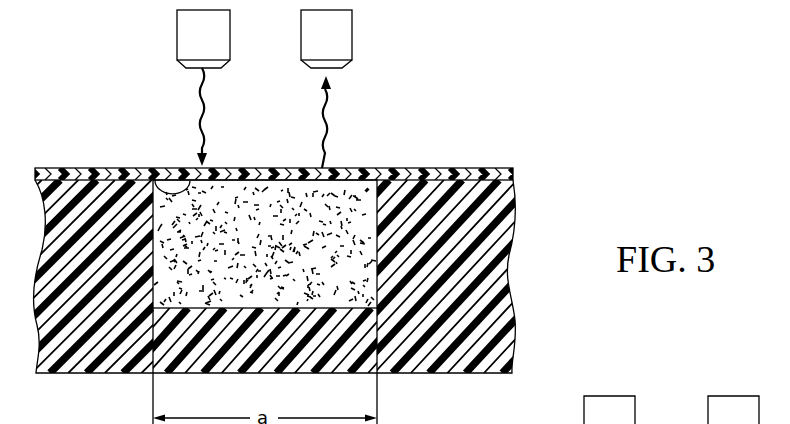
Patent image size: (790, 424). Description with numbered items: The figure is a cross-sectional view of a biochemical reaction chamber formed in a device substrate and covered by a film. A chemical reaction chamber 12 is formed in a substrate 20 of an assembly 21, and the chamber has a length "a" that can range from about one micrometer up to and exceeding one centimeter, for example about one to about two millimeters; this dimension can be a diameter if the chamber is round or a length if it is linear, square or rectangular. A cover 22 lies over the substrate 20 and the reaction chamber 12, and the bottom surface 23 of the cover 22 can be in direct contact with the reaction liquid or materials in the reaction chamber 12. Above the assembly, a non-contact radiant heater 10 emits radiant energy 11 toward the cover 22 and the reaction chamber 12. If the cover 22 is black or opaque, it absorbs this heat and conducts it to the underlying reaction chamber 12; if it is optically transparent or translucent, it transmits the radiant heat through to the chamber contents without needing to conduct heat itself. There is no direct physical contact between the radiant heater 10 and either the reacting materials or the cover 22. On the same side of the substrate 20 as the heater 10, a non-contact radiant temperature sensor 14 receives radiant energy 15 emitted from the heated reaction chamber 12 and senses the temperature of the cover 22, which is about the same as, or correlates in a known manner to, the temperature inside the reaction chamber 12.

The non-contact radiant heater 10 is at (186, 65).
The radiant energy 11 is at (207, 111).
The chemical reaction chamber 12 is at (362, 184).
The non-contact radiant temperature sensor 14 is at (344, 65).
The radiant energy 15 is at (327, 132).
The substrate 20 is at (498, 272).
The assembly 21 is at (350, 250).
The cover 22 is at (443, 170).
The bottom surface 23 is at (156, 178).